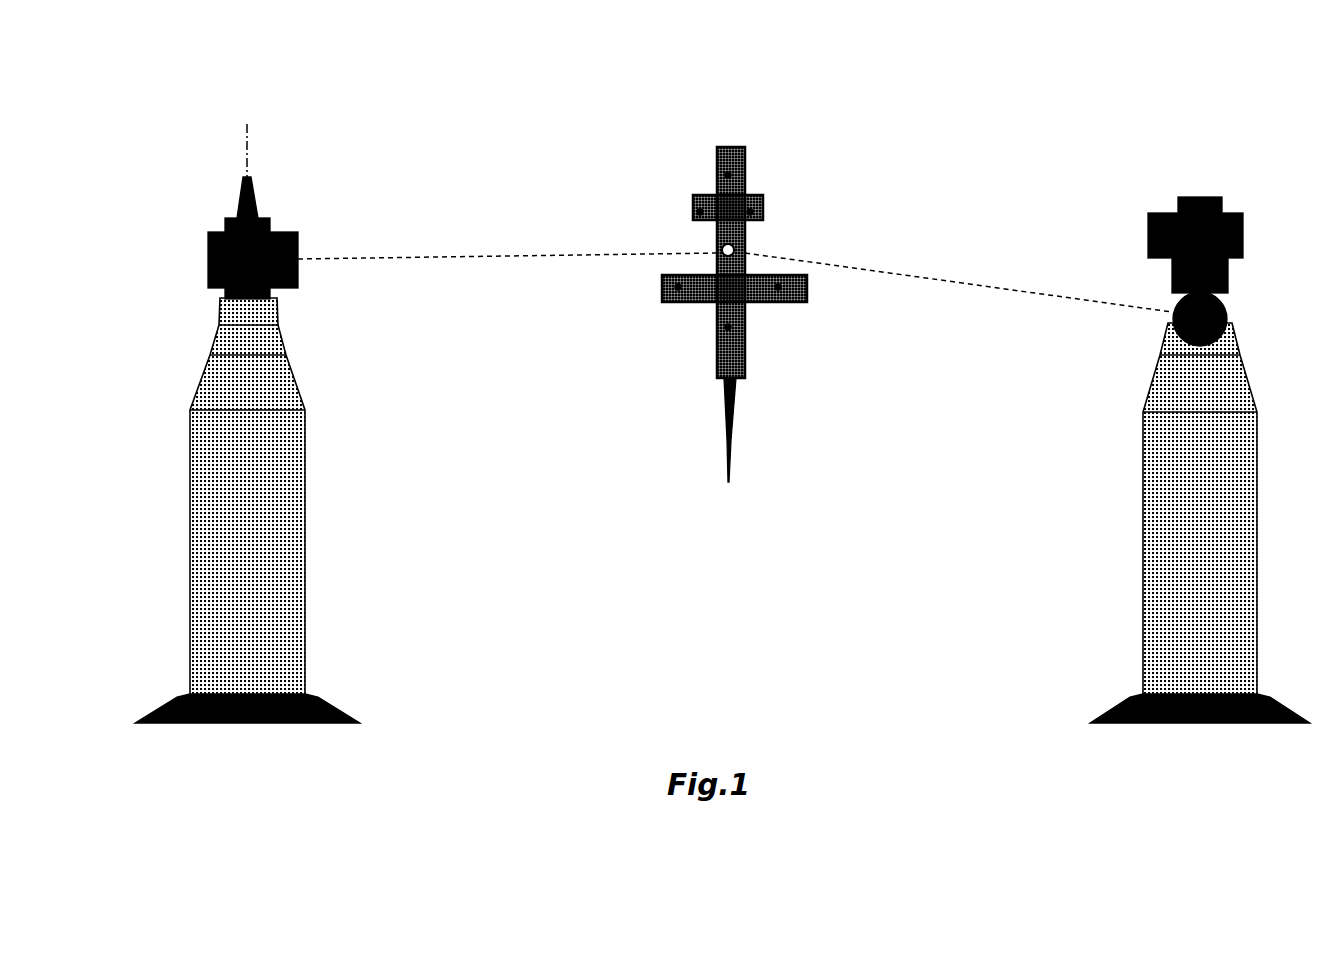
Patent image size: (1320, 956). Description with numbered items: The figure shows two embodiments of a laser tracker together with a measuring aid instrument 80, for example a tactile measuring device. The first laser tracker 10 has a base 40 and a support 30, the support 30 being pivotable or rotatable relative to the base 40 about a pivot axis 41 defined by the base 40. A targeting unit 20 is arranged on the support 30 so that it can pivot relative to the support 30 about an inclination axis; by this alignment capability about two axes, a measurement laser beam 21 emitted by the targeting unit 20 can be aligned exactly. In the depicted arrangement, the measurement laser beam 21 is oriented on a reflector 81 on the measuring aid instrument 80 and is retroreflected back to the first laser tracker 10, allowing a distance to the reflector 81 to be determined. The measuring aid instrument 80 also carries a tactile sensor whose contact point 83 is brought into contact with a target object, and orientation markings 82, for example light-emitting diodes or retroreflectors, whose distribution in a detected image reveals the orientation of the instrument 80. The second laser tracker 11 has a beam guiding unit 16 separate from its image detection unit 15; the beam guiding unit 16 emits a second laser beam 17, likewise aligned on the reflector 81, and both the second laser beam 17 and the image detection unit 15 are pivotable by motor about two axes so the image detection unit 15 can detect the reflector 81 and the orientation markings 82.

The first laser tracker 10 is at (208, 128).
The second laser tracker 11 is at (1176, 153).
The image detection unit 15 is at (1237, 215).
The beam guiding unit 16 is at (1217, 313).
The second laser beam 17 is at (1017, 292).
The targeting unit 20 is at (218, 238).
The measurement laser beam 21 is at (578, 255).
The support 30 is at (258, 232).
The base 40 is at (235, 313).
The pivot axis 41 is at (250, 150).
The measuring aid instrument 80 is at (711, 118).
The reflector 81 is at (735, 250).
The orientation markings 82 is at (730, 175).
The contact point 83 is at (730, 478).